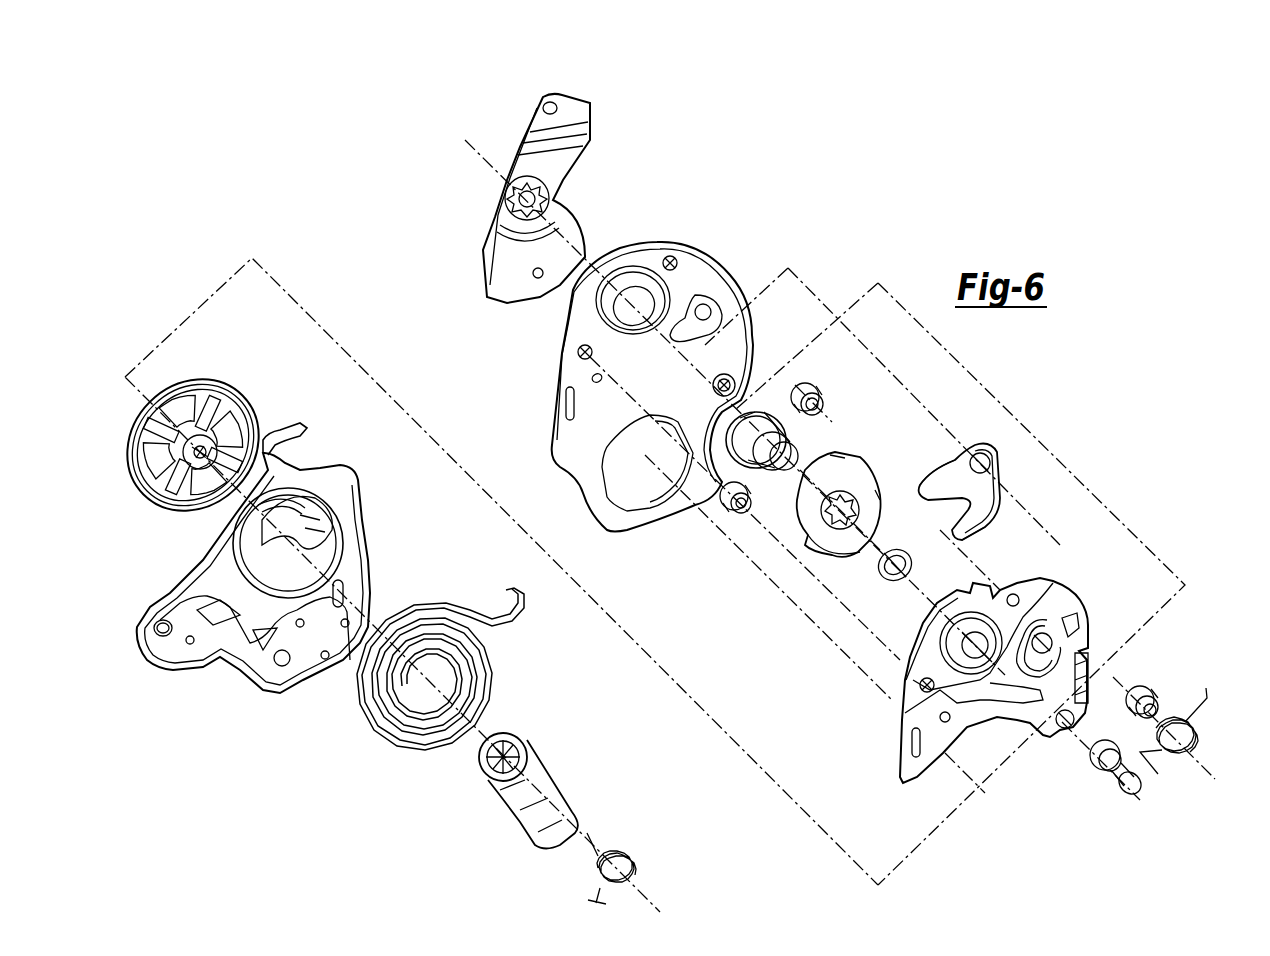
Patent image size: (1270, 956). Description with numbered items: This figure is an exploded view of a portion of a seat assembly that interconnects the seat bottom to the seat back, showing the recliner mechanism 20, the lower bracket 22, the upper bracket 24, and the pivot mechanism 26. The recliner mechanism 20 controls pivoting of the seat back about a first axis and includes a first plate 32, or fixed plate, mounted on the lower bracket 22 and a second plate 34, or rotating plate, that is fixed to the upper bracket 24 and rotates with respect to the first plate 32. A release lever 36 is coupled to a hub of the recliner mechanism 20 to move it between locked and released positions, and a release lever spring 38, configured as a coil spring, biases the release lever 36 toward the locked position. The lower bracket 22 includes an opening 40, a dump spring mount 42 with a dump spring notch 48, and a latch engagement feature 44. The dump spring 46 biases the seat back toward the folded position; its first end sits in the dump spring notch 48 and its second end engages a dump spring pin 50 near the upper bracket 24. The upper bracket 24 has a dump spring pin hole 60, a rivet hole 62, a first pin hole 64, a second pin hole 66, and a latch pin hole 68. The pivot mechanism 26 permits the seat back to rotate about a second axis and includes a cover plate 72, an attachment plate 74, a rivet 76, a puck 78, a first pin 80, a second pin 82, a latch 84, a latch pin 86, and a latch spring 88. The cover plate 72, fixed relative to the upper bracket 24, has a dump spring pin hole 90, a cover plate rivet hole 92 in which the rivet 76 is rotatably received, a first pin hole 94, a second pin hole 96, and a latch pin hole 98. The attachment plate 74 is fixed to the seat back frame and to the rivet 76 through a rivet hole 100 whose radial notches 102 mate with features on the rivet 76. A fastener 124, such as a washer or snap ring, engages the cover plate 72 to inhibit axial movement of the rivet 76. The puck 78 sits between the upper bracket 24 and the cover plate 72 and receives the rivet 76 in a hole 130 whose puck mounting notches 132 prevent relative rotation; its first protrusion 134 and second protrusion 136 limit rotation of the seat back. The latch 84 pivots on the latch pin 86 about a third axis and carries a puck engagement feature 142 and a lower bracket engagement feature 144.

The recliner mechanism 20 is at (215, 380).
The lower bracket 22 is at (205, 676).
The upper bracket 24 is at (705, 245).
The pivot mechanism 26 is at (1075, 425).
The first plate 32 is at (210, 505).
The second plate 34 is at (130, 447).
The release lever 36 is at (537, 768).
The release lever spring 38 is at (612, 850).
The opening 40 is at (294, 580).
The dump spring mount 42 is at (303, 540).
The latch engagement feature 44 is at (304, 431).
The dump spring 46 is at (505, 668).
The dump spring notch 48 is at (268, 556).
The dump spring pin 50 is at (1103, 773).
The dump spring pin hole 60 is at (736, 380).
The rivet hole 62 is at (638, 298).
The first pin hole 64 is at (580, 352).
The second pin hole 66 is at (676, 257).
The latch pin hole 68 is at (712, 308).
The cover plate 72 is at (1018, 580).
The attachment plate 74 is at (545, 100).
The rivet 76 is at (798, 448).
The puck 78 is at (795, 527).
The first pin 80 is at (727, 510).
The second pin 82 is at (820, 396).
The latch 84 is at (978, 443).
The latch pin 86 is at (1152, 696).
The latch spring 88 is at (1196, 740).
The dump spring pin hole 90 is at (1060, 727).
The cover plate rivet hole 92 is at (968, 647).
The first pin hole 94 is at (920, 682).
The second pin hole 96 is at (1020, 596).
The latch pin hole 98 is at (1045, 634).
The rivet hole 100 is at (542, 197).
The notches 102 is at (508, 200).
The fastener 124 is at (882, 573).
The hole 130 is at (830, 514).
The puck mounting notches 132 is at (843, 500).
The first protrusion 134 is at (830, 560).
The second protrusion 136 is at (850, 462).
The puck engagement feature 142 is at (927, 493).
The lower bracket engagement feature 144 is at (948, 521).